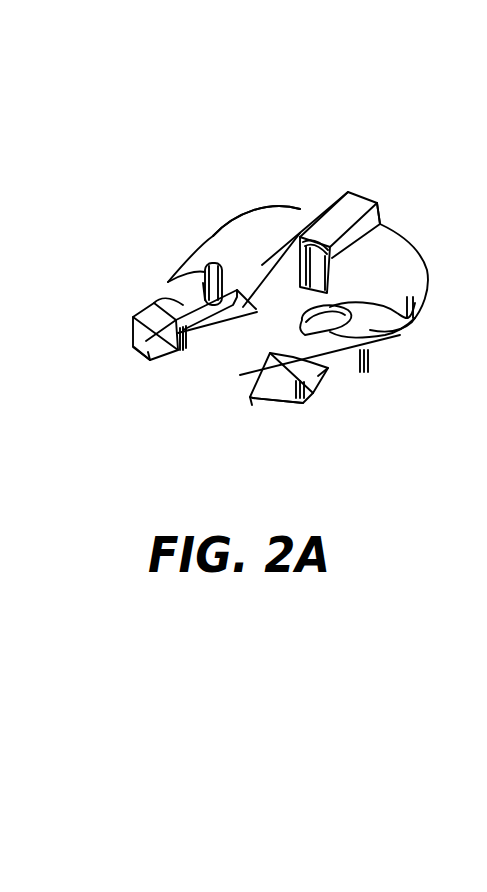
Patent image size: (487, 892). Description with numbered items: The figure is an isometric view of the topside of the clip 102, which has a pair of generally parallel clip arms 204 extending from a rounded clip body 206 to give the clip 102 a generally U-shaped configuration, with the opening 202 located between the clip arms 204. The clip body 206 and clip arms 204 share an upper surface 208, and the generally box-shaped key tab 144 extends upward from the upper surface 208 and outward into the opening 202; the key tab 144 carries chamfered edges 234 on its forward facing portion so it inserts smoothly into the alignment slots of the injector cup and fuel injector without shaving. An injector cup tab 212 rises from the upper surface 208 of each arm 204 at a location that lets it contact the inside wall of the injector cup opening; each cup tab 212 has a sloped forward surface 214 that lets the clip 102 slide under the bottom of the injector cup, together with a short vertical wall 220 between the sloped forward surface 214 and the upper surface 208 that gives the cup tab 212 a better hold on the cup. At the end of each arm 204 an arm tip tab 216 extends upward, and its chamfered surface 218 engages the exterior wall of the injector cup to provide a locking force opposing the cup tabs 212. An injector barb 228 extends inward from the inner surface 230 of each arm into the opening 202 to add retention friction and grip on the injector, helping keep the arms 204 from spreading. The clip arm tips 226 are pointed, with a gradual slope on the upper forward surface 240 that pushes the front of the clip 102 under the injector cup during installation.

The clip 102 is at (146, 103).
The key tab 144 is at (382, 208).
The opening 202 is at (282, 293).
The clip arms 204 is at (176, 377).
The clip body 206 is at (326, 185).
The upper surface 208 is at (280, 238).
The injector cup tab 212 is at (218, 262).
The sloped forward surface 214 is at (205, 272).
The arm tip tab 216 is at (140, 303).
The chamfered surface 218 is at (146, 341).
The vertical wall 220 is at (203, 283).
The clip arm tips 226 is at (148, 352).
The injector barb 228 is at (188, 327).
The inner surface 230 is at (256, 309).
The chamfered edges 234 is at (320, 238).
The upper forward surface 240 is at (140, 352).